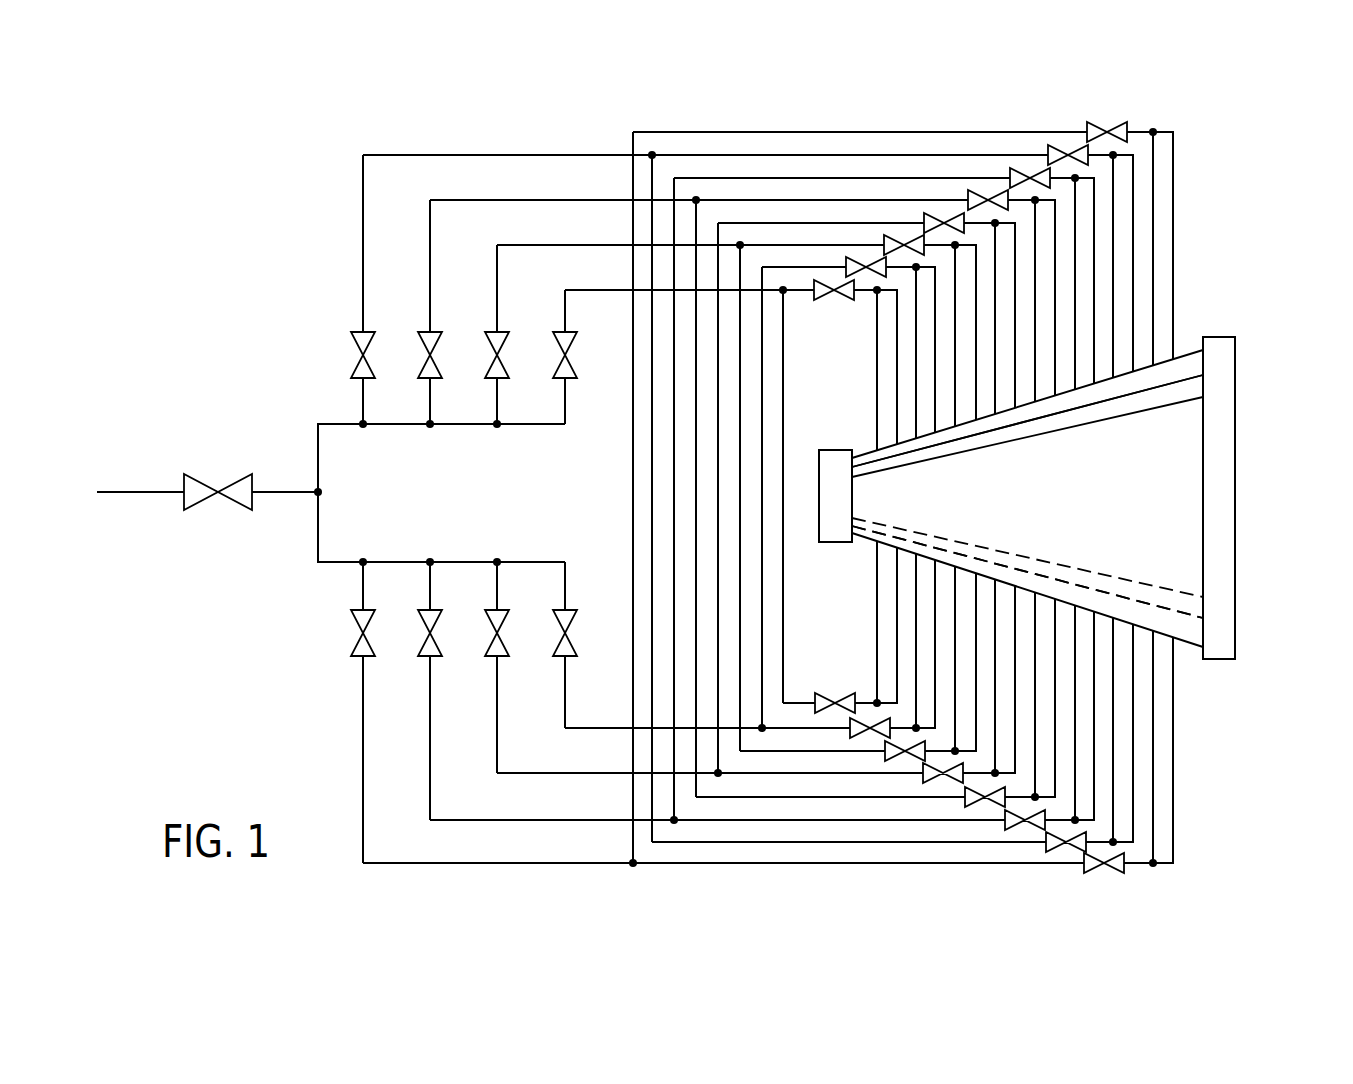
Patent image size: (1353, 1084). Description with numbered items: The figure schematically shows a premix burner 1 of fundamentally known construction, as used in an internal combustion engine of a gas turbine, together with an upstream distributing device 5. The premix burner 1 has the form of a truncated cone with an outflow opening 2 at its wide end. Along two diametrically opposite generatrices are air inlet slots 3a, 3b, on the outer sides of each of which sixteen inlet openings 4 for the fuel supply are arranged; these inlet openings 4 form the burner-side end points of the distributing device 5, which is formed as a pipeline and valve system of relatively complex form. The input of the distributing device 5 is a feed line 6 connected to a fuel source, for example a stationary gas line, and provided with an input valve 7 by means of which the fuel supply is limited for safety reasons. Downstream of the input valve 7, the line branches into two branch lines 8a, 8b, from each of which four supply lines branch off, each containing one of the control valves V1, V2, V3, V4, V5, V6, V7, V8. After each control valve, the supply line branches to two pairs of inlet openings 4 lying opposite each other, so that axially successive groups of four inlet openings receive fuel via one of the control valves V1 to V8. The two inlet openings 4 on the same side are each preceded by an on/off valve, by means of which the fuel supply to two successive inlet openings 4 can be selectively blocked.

The premix burner 1 is at (1063, 508).
The outflow opening 2 is at (1247, 502).
The air inlet slot 3a is at (1192, 388).
The air inlet slot 3b is at (1183, 610).
The inlet openings 4 is at (878, 542).
The distributing device 5 is at (541, 140).
The feed line 6 is at (123, 492).
The input valve 7 is at (214, 510).
The branch line 8a is at (457, 424).
The branch line 8b is at (456, 562).
The control valve V1 is at (382, 289).
The control valve V2 is at (449, 312).
The control valve V3 is at (516, 334).
The control valve V4 is at (584, 357).
The control valve V5 is at (382, 712).
The control valve V6 is at (449, 691).
The control valve V7 is at (516, 667).
The control valve V8 is at (584, 645).